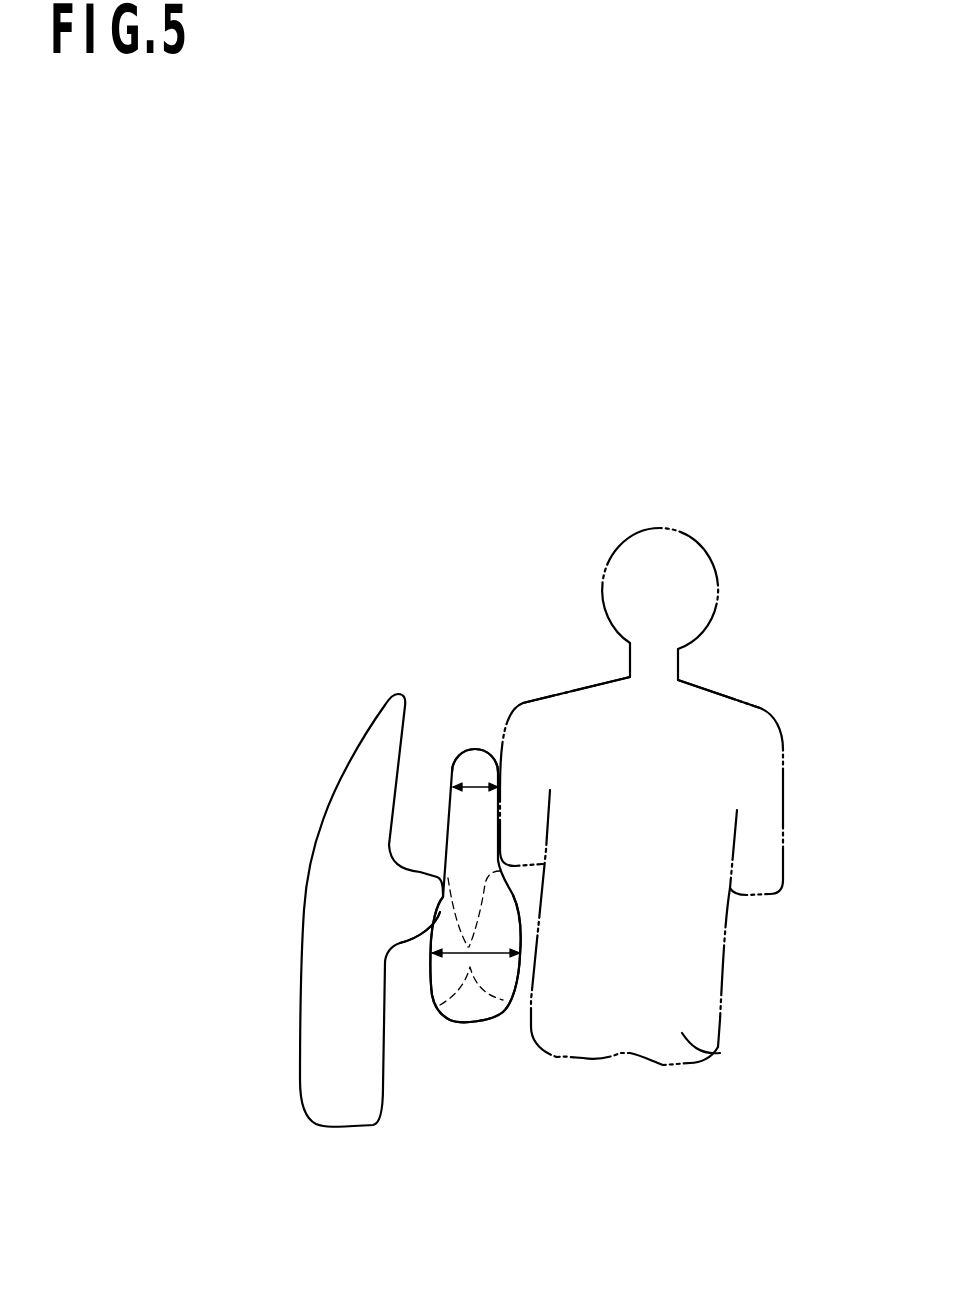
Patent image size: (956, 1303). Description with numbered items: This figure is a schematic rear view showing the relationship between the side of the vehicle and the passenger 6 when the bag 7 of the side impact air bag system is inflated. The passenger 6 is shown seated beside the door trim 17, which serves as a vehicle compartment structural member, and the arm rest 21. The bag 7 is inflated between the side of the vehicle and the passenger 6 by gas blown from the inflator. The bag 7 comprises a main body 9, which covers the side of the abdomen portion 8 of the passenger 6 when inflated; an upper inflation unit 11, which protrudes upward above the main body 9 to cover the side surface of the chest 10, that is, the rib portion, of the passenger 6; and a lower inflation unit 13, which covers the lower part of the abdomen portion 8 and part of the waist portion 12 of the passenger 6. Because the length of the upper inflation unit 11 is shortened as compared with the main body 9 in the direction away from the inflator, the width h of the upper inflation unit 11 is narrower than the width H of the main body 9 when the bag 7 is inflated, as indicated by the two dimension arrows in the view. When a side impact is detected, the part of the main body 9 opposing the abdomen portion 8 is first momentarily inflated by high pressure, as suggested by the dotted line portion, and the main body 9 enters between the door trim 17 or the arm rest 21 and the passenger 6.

The passenger 6 is at (682, 796).
The bag 7 is at (452, 720).
The abdomen portion 8 is at (657, 933).
The main body 9 is at (441, 1010).
The chest 10 is at (687, 758).
The upper inflation unit 11 is at (480, 749).
The waist portion 12 is at (720, 1053).
The lower inflation unit 13 is at (470, 1022).
The door trim 17 is at (391, 833).
The arm rest 21 is at (417, 913).